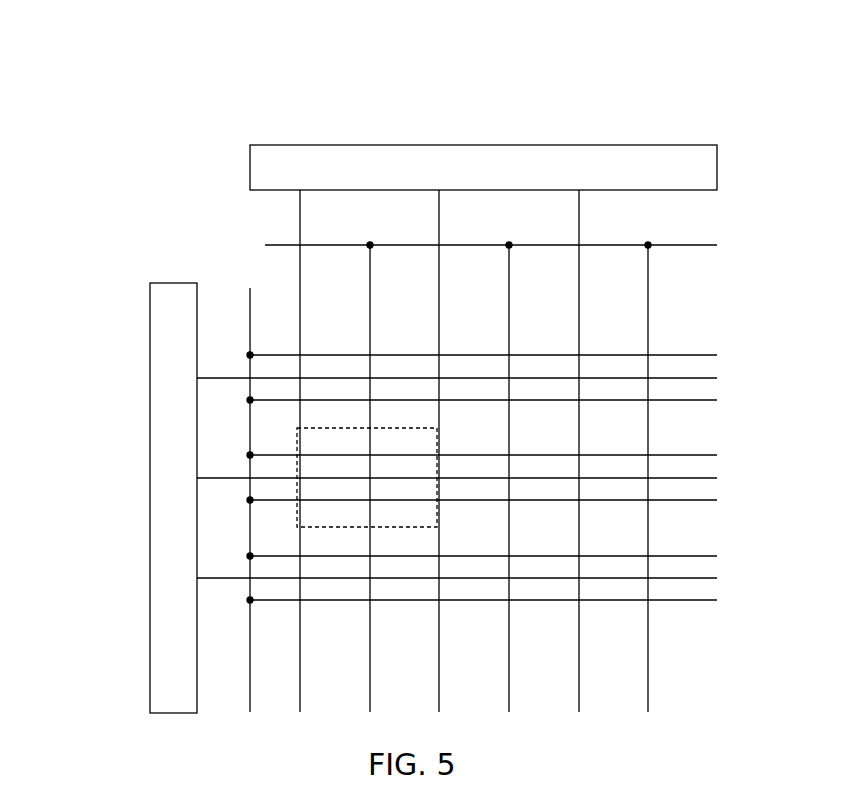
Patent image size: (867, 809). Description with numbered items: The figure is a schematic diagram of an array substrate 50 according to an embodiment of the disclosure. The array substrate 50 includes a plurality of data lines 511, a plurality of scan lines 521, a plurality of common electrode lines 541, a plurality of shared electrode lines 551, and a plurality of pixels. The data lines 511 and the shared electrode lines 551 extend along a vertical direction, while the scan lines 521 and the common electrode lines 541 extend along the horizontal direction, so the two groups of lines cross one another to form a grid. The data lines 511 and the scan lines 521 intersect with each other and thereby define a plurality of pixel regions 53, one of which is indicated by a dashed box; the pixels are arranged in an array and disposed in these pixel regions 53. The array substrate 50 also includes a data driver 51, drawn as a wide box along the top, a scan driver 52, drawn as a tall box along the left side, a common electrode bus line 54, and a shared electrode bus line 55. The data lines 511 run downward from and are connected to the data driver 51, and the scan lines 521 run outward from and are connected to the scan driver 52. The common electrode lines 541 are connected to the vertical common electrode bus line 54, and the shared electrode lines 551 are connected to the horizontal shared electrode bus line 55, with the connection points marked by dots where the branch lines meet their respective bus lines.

The array substrate 50 is at (146, 58).
The data driver 51 is at (295, 145).
The data lines 511 is at (301, 212).
The scan driver 52 is at (150, 355).
The scan lines 521 is at (216, 578).
The pixel regions 53 is at (297, 445).
The common electrode bus line 54 is at (250, 292).
The common electrode lines 541 is at (697, 355).
The shared electrode bus line 55 is at (268, 243).
The shared electrode lines 551 is at (649, 290).